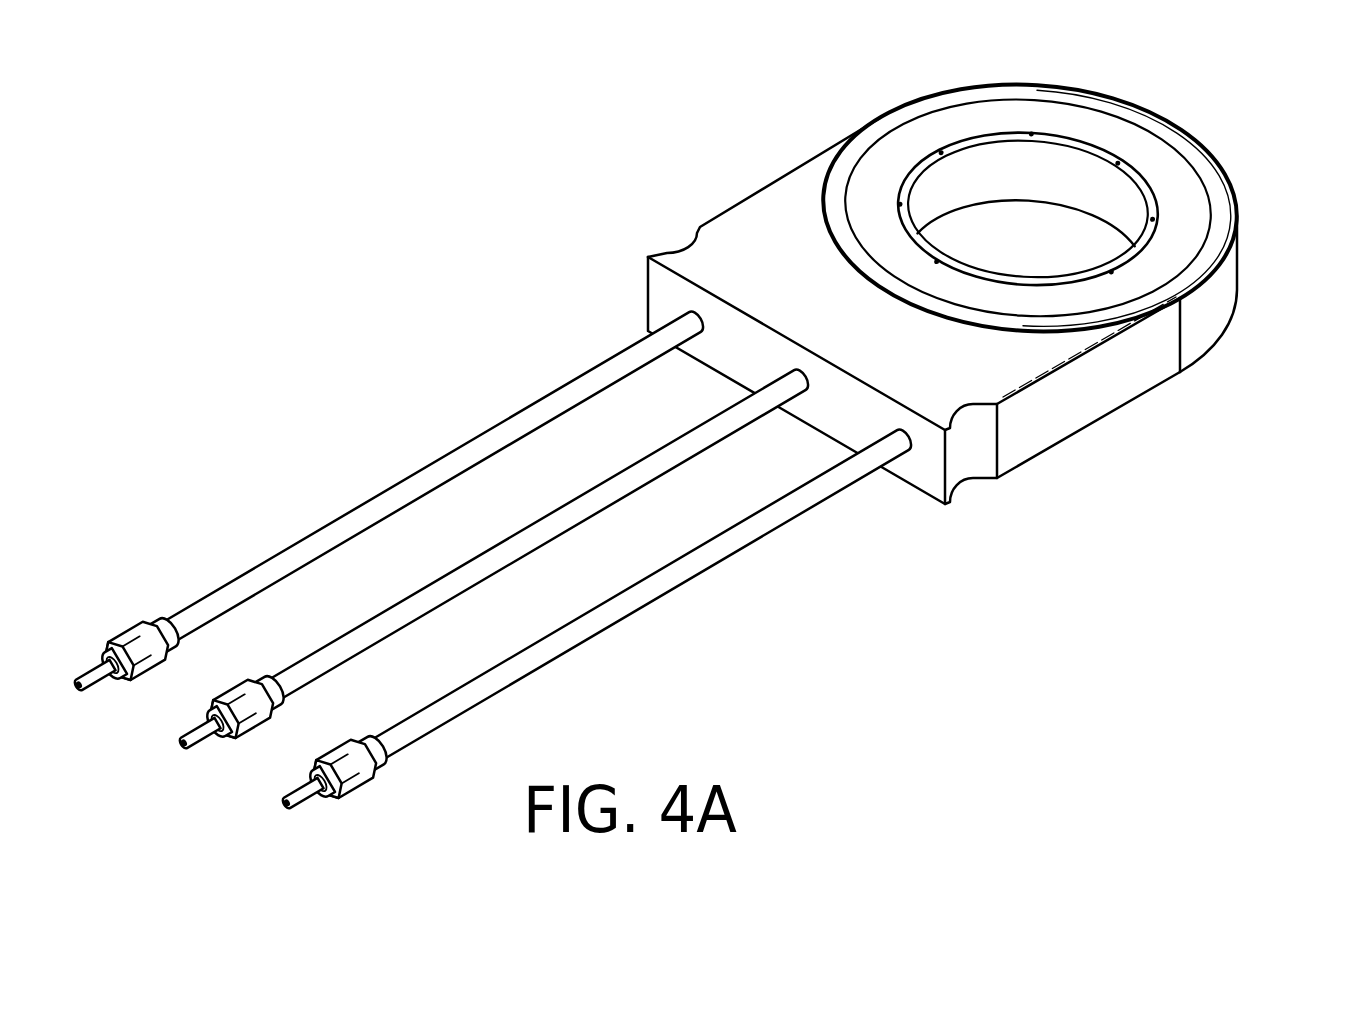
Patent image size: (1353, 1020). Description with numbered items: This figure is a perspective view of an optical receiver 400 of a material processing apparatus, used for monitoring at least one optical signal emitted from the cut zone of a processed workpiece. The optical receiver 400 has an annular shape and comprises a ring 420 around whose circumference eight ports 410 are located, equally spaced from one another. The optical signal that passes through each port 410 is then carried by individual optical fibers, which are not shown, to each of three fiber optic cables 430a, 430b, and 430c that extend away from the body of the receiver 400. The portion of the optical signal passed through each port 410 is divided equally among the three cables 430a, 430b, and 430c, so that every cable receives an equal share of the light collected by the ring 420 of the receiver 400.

The optical receiver 400 is at (929, 586).
The ports 410 is at (1117, 160).
The ring 420 is at (1178, 240).
The fiber optic cable 430a is at (648, 604).
The fiber optic cable 430b is at (558, 538).
The fiber optic cable 430c is at (439, 458).